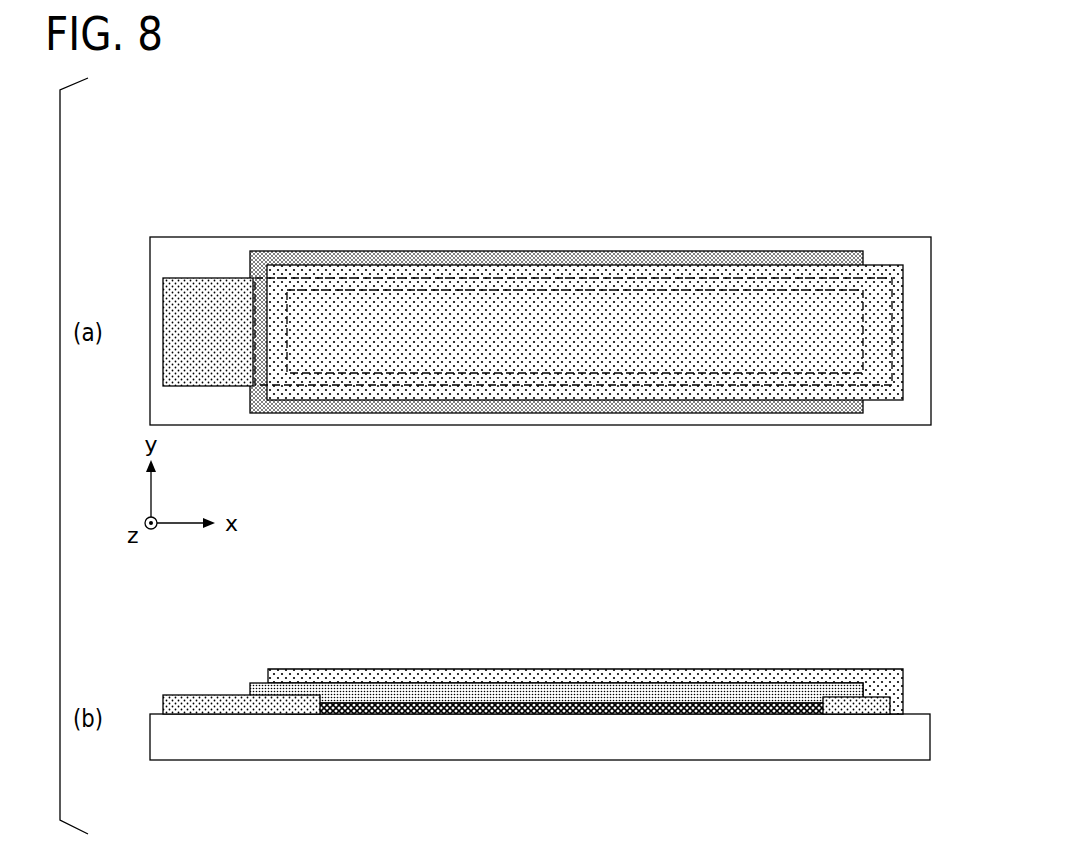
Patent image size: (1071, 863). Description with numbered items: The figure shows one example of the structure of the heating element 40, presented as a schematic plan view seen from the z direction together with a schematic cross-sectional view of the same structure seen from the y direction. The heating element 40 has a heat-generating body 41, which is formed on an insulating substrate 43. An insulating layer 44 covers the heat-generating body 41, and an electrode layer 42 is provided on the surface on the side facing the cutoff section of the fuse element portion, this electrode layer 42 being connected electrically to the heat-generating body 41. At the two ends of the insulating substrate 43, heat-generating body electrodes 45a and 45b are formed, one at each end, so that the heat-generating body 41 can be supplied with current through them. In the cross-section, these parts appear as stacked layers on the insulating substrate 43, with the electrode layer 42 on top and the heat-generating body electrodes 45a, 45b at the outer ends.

The heating element 40 is at (857, 170).
The heat-generating body 41 is at (660, 280).
The electrode layer 42 is at (434, 282).
The insulating substrate 43 is at (662, 733).
The insulating layer 44 is at (617, 697).
The heat-generating body electrode 45a is at (213, 305).
The heat-generating body electrode 45b is at (872, 392).